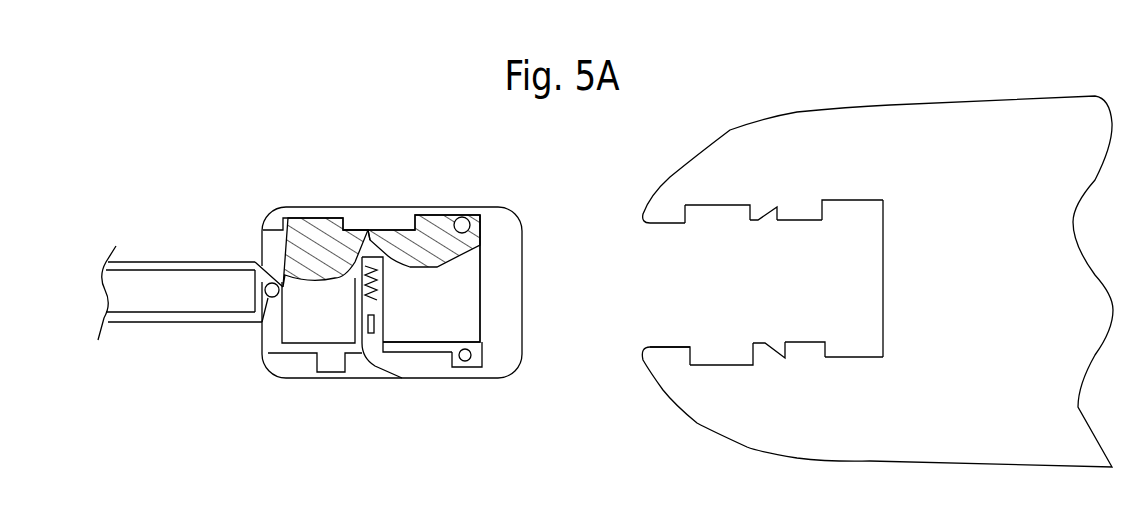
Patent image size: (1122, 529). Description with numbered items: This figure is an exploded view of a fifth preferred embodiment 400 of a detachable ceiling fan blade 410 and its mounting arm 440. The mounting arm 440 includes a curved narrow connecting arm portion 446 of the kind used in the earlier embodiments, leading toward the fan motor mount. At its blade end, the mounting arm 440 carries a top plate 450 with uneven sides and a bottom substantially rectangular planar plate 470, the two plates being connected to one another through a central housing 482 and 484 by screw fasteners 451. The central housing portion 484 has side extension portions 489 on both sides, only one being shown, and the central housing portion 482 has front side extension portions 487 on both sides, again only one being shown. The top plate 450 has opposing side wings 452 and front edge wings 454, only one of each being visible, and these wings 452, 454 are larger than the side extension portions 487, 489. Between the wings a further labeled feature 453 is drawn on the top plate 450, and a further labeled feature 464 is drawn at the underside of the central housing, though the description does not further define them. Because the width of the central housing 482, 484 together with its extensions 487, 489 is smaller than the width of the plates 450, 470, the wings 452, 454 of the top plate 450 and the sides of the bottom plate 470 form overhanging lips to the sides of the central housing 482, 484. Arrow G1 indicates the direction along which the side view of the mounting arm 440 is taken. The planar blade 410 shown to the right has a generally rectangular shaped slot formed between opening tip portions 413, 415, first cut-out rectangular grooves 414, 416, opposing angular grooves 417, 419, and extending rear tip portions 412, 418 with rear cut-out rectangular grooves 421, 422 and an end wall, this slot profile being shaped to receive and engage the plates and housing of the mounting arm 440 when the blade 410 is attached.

The fifth preferred embodiment 400 is at (572, 176).
The blade 410 is at (919, 124).
The extending rear tip portion 412 is at (797, 222).
The opening tip portion 413 is at (668, 347).
The first cut-out rectangular groove 414 is at (722, 362).
The opening tip portion 415 is at (680, 227).
The first cut-out rectangular groove 416 is at (723, 205).
The angular groove 417 is at (775, 208).
The extending rear tip portion 418 is at (813, 340).
The angular groove 419 is at (785, 358).
The rear cut-out rectangular groove 421 is at (850, 198).
The rear cut-out rectangular groove 422 is at (863, 360).
The mounting arm 440 is at (272, 172).
The curved narrow connecting arm portion 446 is at (170, 292).
The top plate 450 is at (277, 262).
The screw fastener 451 is at (460, 218).
The side wing 452 is at (315, 218).
The junction 453 is at (375, 228).
The front edge wing 454 is at (430, 225).
The plunger finger 464 is at (367, 357).
The bottom plate 470 is at (497, 268).
The central housing 482 is at (445, 303).
The central housing 484 is at (305, 337).
The front side extension portion 487 is at (468, 360).
The side extension portion 489 is at (342, 365).
The viewing direction G1 is at (417, 419).